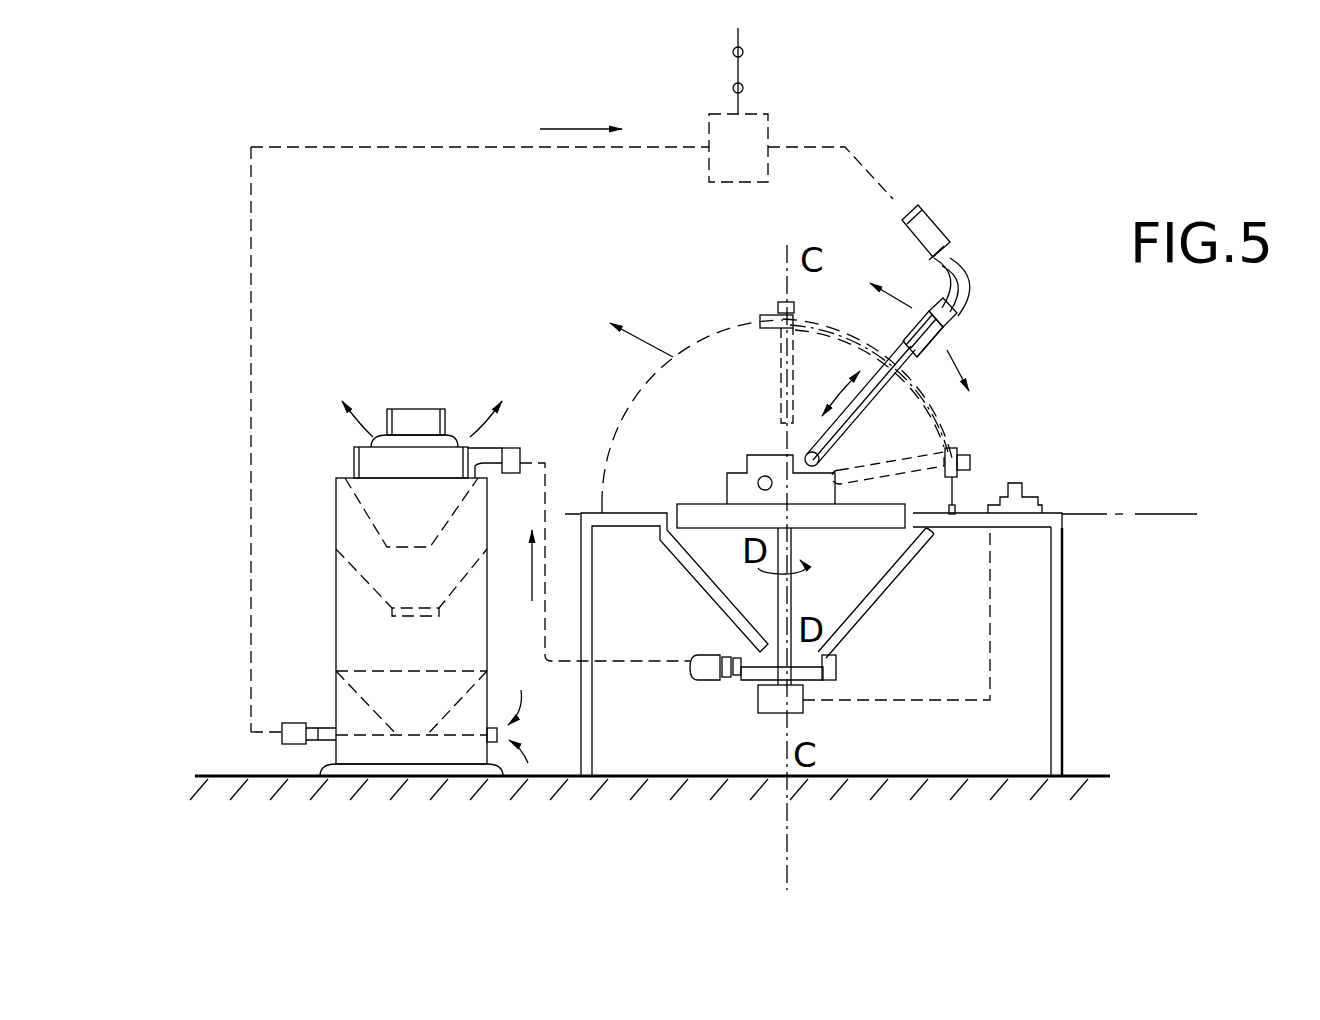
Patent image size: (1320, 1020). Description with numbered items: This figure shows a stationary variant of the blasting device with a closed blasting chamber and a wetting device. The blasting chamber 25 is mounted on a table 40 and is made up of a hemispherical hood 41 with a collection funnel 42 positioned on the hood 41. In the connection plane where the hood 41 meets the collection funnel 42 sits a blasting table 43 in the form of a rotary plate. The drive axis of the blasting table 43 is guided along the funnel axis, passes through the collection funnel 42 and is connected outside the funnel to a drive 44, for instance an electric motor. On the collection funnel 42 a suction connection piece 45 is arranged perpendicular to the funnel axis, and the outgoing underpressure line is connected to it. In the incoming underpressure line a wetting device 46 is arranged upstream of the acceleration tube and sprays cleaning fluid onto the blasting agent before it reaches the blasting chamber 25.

The blasting chamber 25 is at (951, 422).
The table 40 is at (1052, 593).
The hemispherical hood 41 is at (830, 322).
The collection funnel 42 is at (862, 625).
The blasting table 43 is at (697, 508).
The drive 44 is at (803, 700).
The suction connection piece 45 is at (757, 665).
The wetting device 46 is at (747, 132).